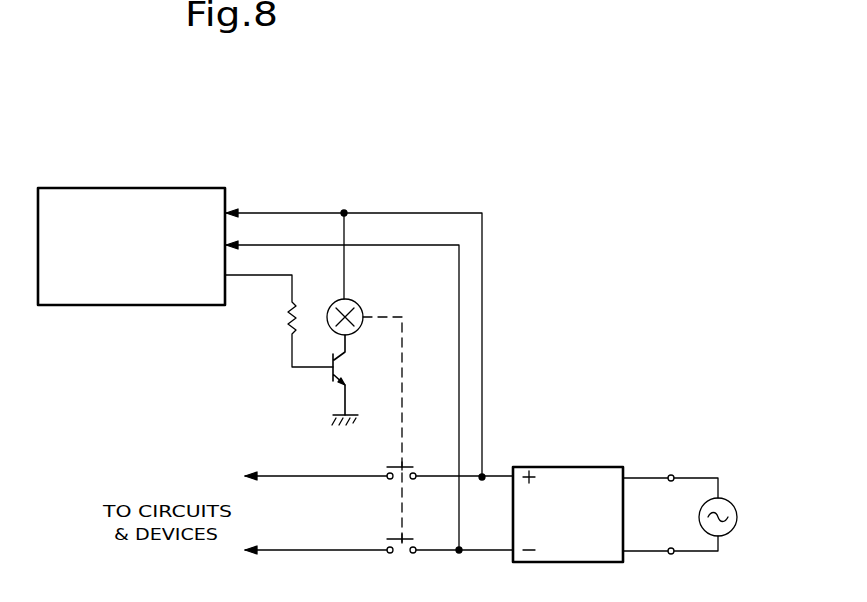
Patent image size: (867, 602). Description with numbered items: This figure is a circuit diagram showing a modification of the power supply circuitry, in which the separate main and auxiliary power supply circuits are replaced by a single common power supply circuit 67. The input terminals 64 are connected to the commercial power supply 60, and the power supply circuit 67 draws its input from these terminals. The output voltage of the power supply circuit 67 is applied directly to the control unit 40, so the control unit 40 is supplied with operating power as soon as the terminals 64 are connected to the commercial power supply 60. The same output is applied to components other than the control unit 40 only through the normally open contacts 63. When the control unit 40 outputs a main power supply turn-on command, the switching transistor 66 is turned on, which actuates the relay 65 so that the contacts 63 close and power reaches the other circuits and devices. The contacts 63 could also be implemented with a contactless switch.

The control unit 40 is at (183, 188).
The commercial power supply 60 is at (731, 503).
The normally open contacts 63 is at (396, 538).
The input terminals 64 is at (670, 482).
The relay 65 is at (358, 305).
The switching transistor 66 is at (338, 368).
The common power supply circuit 67 is at (590, 467).